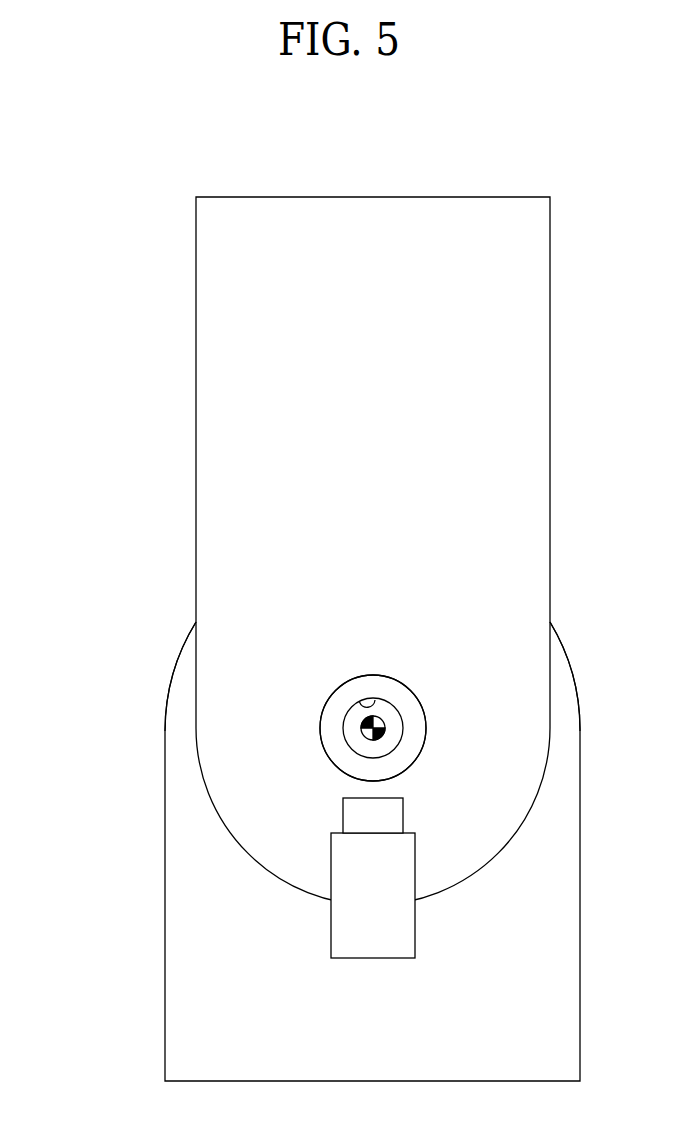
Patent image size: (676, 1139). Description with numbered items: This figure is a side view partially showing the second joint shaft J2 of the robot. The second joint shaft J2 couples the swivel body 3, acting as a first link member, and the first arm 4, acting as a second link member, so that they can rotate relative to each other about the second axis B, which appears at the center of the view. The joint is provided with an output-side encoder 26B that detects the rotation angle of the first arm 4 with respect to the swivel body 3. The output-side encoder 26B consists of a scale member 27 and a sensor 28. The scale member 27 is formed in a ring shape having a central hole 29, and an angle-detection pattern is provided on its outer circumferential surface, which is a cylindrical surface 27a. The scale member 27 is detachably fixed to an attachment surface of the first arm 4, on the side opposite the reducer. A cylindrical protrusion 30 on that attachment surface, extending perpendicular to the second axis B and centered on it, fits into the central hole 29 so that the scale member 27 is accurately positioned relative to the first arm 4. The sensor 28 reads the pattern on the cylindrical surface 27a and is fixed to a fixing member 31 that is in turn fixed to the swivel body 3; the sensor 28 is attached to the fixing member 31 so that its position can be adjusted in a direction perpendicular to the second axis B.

The swivel body 3 is at (165, 915).
The first arm 4 is at (196, 312).
The second joint shaft J2 is at (148, 697).
The output-side encoder 26B is at (303, 788).
The scale member 27 is at (345, 697).
The cylindrical surface 27a is at (320, 718).
The sensor 28 is at (403, 813).
The central hole 29 is at (372, 703).
The cylindrical protrusion 30 is at (382, 707).
The fixing member 31 is at (415, 935).
The second axis B is at (385, 732).